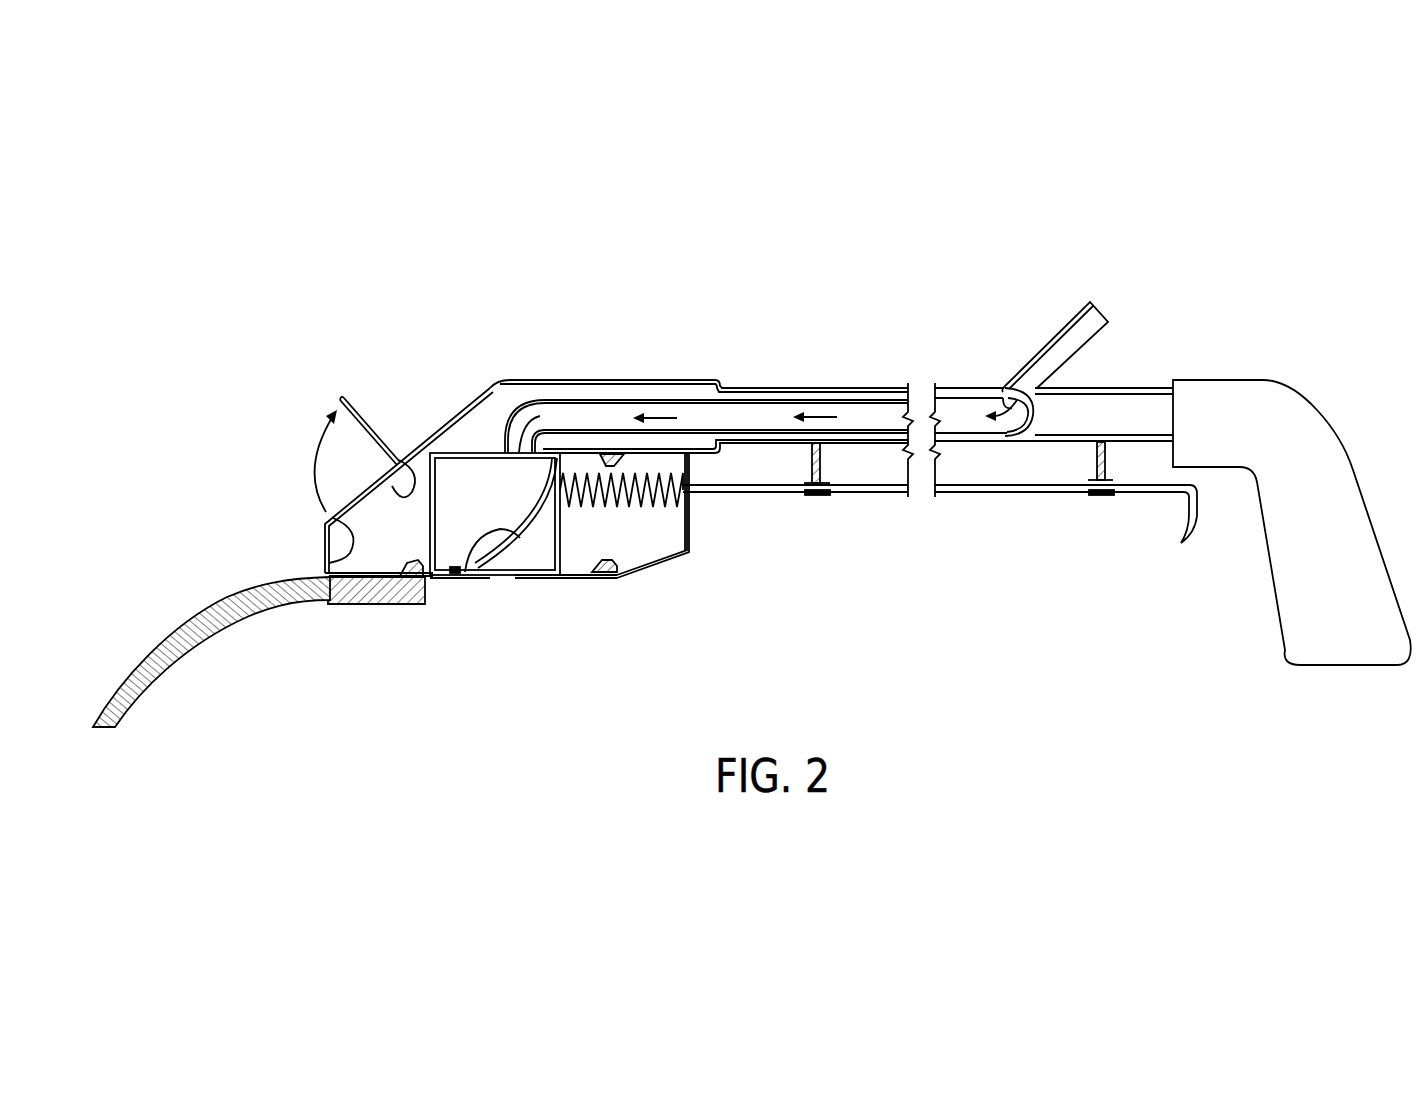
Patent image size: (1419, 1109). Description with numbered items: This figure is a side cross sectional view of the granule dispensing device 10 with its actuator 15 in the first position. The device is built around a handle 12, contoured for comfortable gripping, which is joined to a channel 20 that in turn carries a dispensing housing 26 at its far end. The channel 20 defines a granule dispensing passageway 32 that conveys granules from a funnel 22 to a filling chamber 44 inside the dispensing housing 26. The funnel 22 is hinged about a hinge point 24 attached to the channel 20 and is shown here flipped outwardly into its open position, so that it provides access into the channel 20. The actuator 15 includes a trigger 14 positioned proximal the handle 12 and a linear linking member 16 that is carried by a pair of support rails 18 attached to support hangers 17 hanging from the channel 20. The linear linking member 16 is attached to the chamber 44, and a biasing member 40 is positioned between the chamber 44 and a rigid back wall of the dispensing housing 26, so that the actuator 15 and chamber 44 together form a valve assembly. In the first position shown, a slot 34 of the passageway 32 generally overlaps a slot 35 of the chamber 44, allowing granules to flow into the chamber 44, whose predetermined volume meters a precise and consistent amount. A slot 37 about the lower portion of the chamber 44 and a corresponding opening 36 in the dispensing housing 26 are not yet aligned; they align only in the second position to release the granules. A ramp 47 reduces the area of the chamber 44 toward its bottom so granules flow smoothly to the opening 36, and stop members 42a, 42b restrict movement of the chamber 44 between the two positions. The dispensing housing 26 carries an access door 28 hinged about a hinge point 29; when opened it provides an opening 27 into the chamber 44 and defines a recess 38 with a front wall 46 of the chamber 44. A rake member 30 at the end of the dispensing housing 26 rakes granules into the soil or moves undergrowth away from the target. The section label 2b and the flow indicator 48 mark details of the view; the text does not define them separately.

The granule dispensing device 10 is at (1108, 726).
The handle 12 is at (1307, 572).
The trigger 14 is at (1187, 518).
The actuator 15 is at (1086, 576).
The linear linking member 16 is at (755, 493).
The support hangers 17 is at (1098, 442).
The support rails 18 is at (818, 496).
The channel 20 is at (875, 388).
The funnel 22 is at (1057, 323).
The hinge point 24 is at (1003, 387).
The dispensing housing 26 is at (284, 436).
The opening 27 is at (327, 563).
The access door 28 is at (344, 401).
The hinge point 29 is at (402, 467).
The rake member 30 is at (147, 673).
The granule dispensing passageway 32 is at (756, 428).
The slot 34 is at (468, 456).
The slot 35 is at (535, 471).
The opening 36 is at (502, 596).
The slot 37 is at (448, 573).
The recess 38 is at (339, 542).
The biasing member 40 is at (640, 502).
The stop member 42a is at (401, 469).
The stop member 42b is at (602, 453).
The filling chamber 44 is at (538, 550).
The front wall 46 is at (422, 510).
The ramp 47 is at (465, 572).
The passage inlet 48 is at (512, 444).
The housing section 2b is at (557, 380).